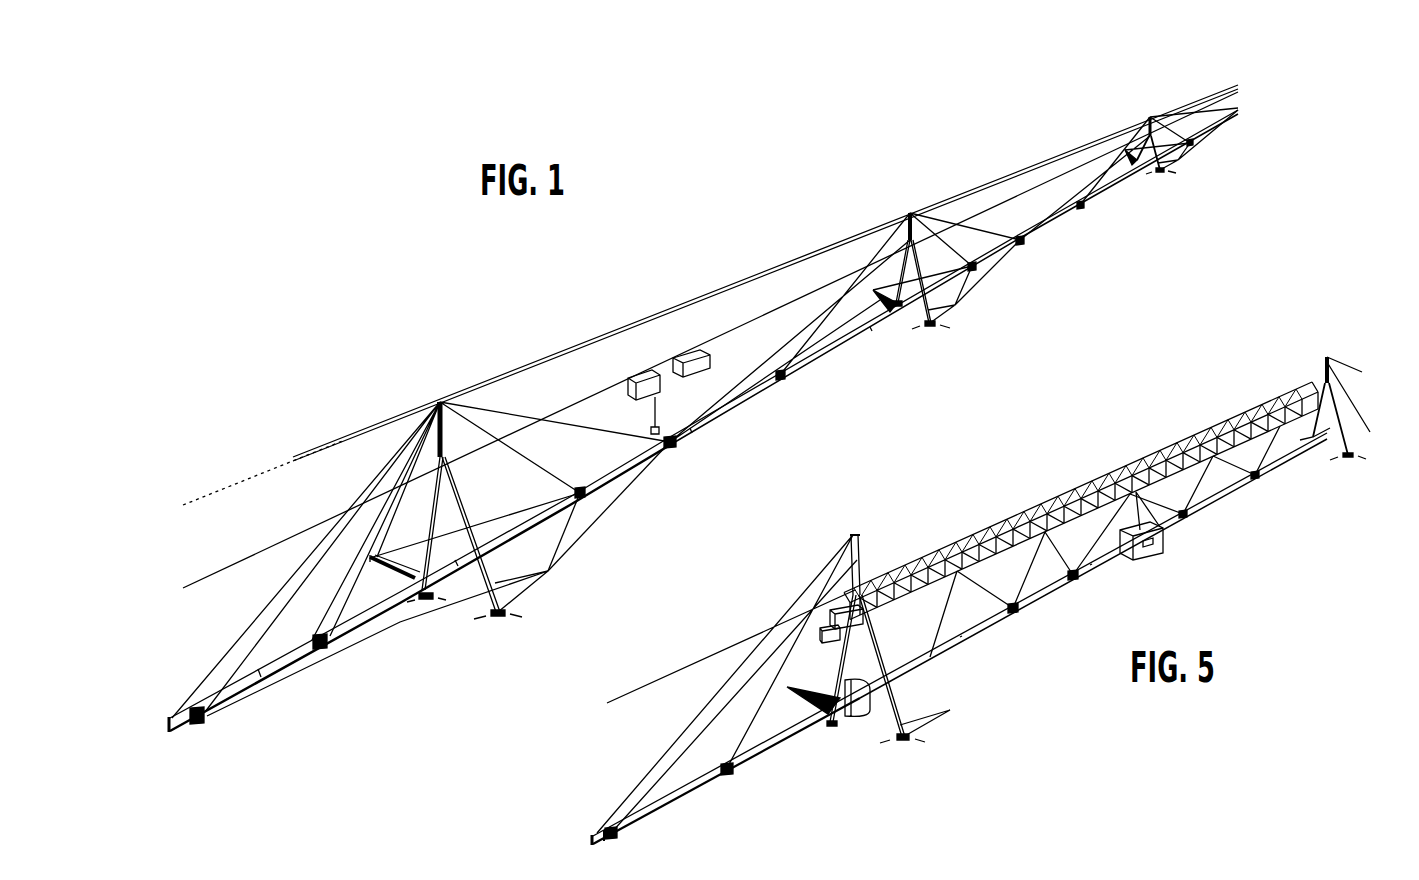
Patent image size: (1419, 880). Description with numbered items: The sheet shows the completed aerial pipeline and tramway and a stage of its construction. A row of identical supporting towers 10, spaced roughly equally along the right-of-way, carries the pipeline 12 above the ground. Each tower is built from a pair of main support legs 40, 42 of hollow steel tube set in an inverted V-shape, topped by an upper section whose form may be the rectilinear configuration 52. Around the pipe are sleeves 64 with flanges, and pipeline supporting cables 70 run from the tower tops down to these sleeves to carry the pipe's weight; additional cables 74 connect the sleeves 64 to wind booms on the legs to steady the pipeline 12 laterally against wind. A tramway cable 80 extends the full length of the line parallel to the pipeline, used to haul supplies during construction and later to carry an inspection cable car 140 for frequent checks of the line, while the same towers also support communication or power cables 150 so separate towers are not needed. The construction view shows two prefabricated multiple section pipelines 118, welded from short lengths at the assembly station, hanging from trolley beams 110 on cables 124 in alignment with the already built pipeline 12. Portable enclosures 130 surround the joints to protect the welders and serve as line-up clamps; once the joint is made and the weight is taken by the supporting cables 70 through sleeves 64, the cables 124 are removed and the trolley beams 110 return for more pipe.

In FIG. 1, the supporting tower 10 is at (705, 413).
In FIG. 1, the pipeline 12 is at (735, 398).
In FIG. 5, the pipeline 12 is at (688, 793).
In FIG. 1, the main support leg 40 is at (472, 495).
In FIG. 1, the main support leg 42 is at (430, 511).
In FIG. 1, the rectilinear configuration 52 is at (446, 433).
In FIG. 1, the sleeve 64 is at (211, 718).
In FIG. 5, the sleeve 64 is at (1015, 614).
In FIG. 1, the pipeline supporting cables 70 is at (354, 500).
In FIG. 5, the pipeline supporting cables 70 is at (793, 607).
In FIG. 1, the cable 74 is at (632, 489).
In FIG. 1, the tramway cable 80 is at (738, 334).
In FIG. 1, the inspection cable car 140 is at (660, 386).
In FIG. 1, the communication or power cables 150 is at (607, 335).
In FIG. 5, the trolley beam 110 is at (956, 552).
In FIG. 5, the multiple section pipeline 118 is at (970, 636).
In FIG. 5, the cables 124 is at (985, 578).
In FIG. 5, the portable enclosure 130 is at (838, 722).